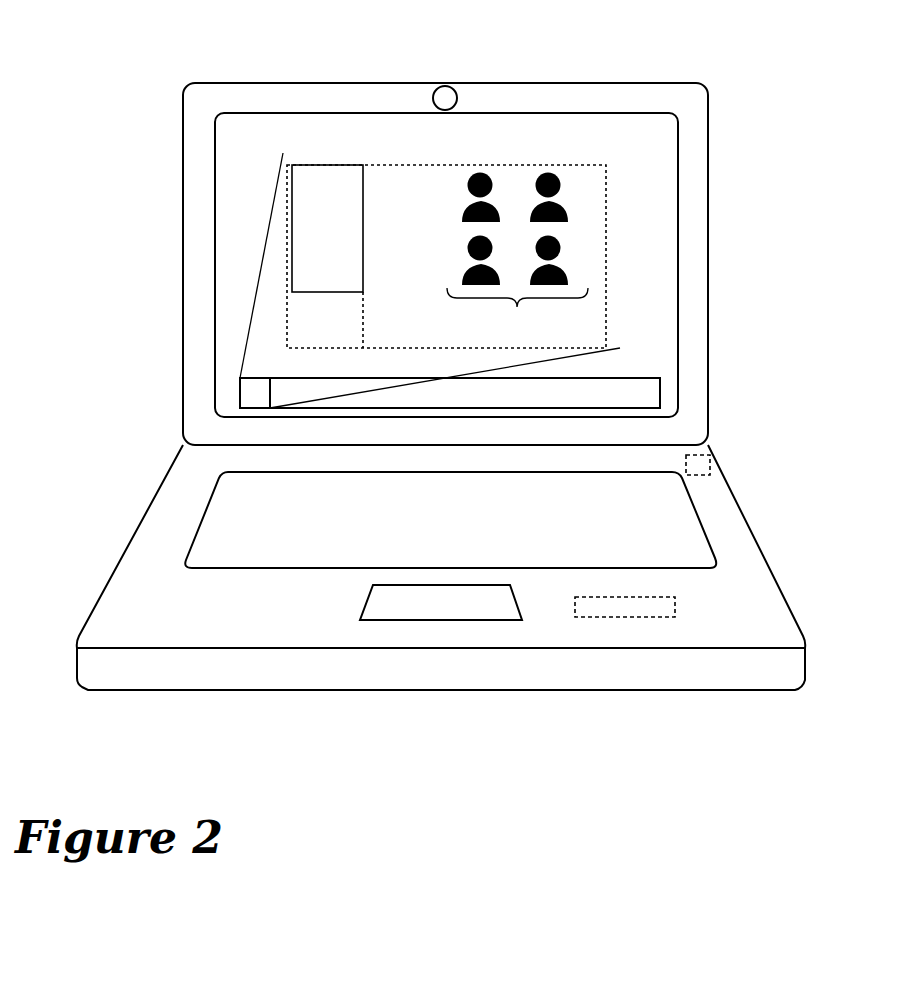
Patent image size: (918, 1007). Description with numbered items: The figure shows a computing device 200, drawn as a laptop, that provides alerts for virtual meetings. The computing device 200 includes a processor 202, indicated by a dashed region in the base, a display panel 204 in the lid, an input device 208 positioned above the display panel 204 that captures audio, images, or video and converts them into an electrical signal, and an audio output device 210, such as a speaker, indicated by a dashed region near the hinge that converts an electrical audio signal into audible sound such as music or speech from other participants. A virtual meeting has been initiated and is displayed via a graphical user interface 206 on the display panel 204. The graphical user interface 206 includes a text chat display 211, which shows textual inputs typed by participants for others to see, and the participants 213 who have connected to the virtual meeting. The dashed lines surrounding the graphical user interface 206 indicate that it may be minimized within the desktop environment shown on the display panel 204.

The computing device 200 is at (218, 82).
The processor 202 is at (628, 617).
The display panel 204 is at (678, 158).
The graphical user interface 206 is at (606, 252).
The input device 208 is at (446, 86).
The audio output device 210 is at (710, 465).
The text chat display 211 is at (288, 272).
The participants 213 is at (536, 339).